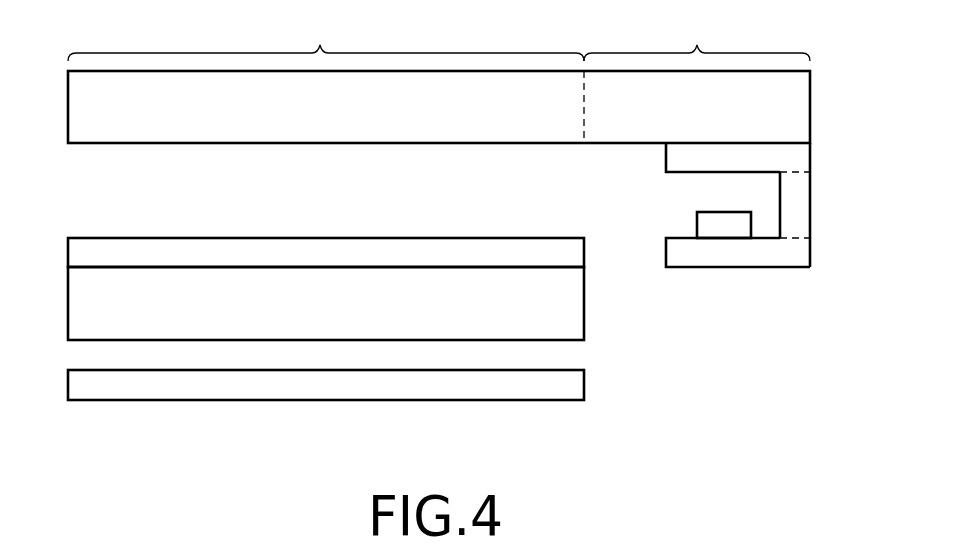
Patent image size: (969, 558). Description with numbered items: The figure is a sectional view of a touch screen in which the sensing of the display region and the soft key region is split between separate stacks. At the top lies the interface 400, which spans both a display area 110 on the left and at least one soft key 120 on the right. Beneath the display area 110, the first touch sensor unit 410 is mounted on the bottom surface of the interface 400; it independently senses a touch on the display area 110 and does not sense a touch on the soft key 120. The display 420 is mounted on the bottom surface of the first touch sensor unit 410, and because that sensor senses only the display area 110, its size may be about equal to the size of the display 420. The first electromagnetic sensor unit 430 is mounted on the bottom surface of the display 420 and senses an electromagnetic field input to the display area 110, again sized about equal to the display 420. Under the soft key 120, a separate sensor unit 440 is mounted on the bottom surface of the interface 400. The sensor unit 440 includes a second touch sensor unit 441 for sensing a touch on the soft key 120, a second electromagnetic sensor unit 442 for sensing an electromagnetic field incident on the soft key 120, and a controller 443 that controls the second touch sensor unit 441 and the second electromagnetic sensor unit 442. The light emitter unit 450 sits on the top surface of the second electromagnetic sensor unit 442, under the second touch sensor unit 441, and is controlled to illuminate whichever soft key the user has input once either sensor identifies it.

The display area 110 is at (326, 38).
The soft key 120 is at (697, 38).
The interface 400 is at (812, 105).
The first touch sensor unit 410 is at (586, 256).
The display 420 is at (586, 305).
The first electromagnetic sensor unit 430 is at (586, 385).
The sensor unit 440 is at (771, 205).
The second touch sensor unit 441 is at (806, 158).
The second electromagnetic sensor unit 442 is at (806, 255).
The controller 443 is at (806, 190).
The light emitter unit 450 is at (720, 212).